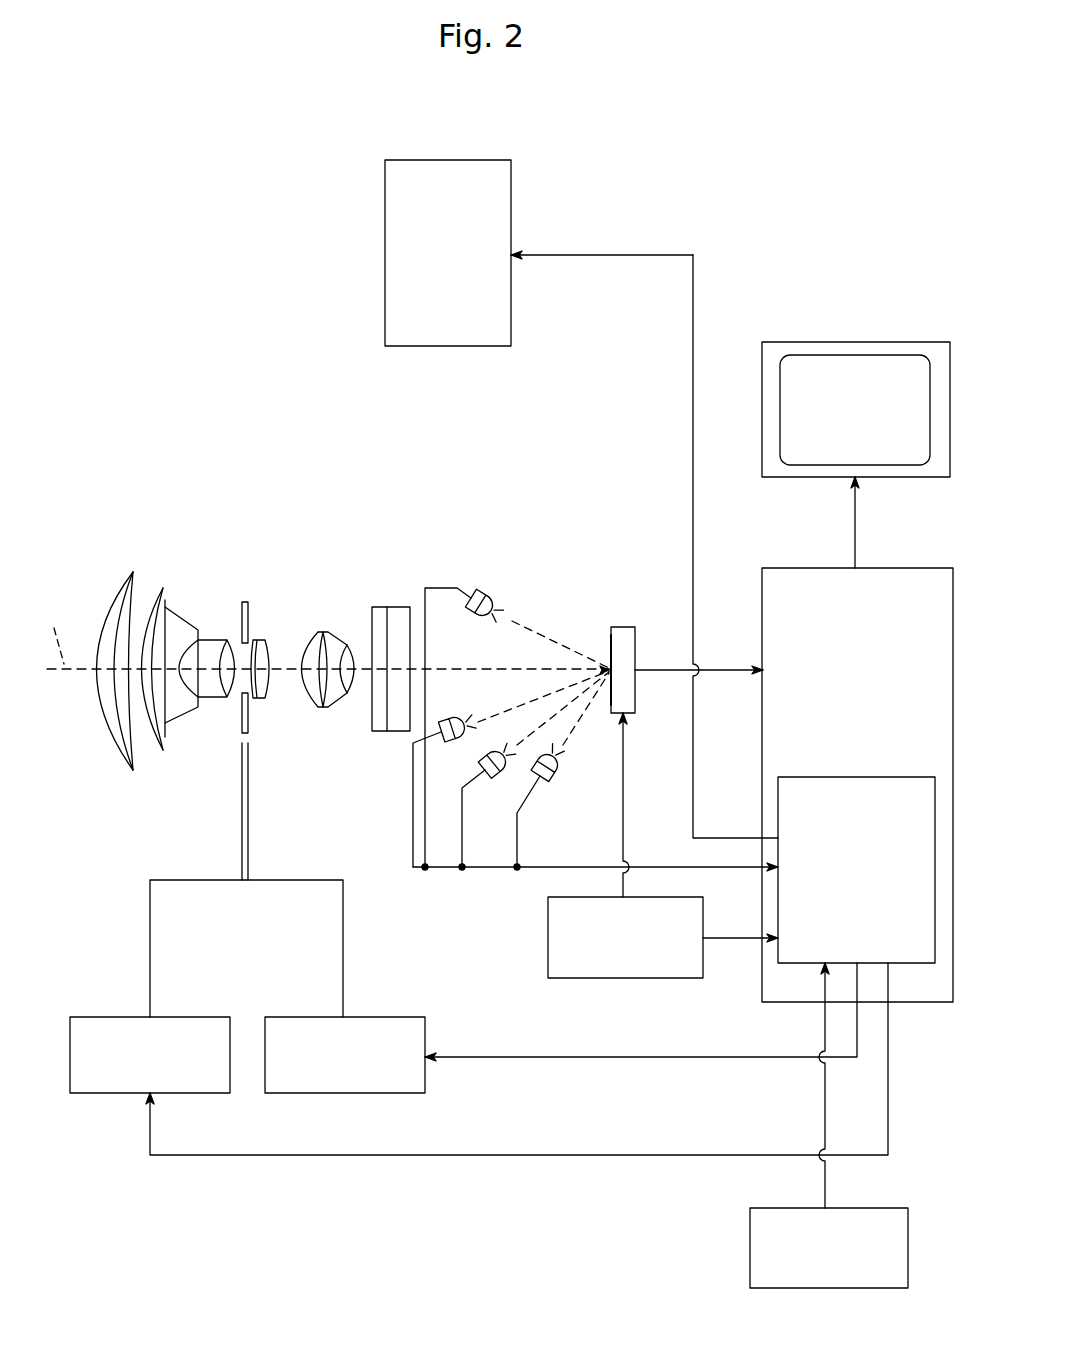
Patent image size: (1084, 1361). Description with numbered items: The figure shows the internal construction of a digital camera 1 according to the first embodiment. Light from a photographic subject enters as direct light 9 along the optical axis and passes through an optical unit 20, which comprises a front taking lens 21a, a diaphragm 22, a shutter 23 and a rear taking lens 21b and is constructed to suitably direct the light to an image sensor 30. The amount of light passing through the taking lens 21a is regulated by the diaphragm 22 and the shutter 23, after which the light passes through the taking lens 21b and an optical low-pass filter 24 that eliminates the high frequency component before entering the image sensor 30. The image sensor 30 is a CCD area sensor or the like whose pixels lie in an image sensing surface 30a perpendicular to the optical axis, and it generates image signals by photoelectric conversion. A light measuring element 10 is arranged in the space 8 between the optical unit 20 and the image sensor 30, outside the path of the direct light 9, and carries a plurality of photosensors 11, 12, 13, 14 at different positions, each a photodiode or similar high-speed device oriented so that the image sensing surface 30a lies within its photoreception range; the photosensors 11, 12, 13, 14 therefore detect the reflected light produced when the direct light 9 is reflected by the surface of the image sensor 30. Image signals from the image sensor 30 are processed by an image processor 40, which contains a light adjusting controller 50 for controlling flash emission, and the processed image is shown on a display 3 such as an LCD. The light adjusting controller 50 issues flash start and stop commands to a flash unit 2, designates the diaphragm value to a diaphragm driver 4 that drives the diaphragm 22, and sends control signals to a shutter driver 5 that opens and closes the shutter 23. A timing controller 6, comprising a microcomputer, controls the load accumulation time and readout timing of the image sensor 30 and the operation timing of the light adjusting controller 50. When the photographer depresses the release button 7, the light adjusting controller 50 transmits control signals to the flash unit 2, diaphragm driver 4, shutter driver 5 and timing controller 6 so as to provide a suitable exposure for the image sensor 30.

The digital camera 1 is at (128, 123).
The flash unit 2 is at (447, 160).
The display 3 is at (853, 342).
The diaphragm driver 4 is at (110, 1017).
The shutter driver 5 is at (385, 1017).
The timing controller 6 is at (625, 978).
The release button 7 is at (750, 1250).
The space 8 is at (456, 569).
The direct light 9 is at (53, 629).
The light measuring element 10 is at (510, 590).
The photosensor 11 is at (482, 588).
The photosensor 12 is at (450, 713).
The photosensor 13 is at (498, 777).
The photosensor 14 is at (555, 783).
The optical unit 20 is at (93, 485).
The taking lens 21a is at (153, 577).
The taking lens 21b is at (303, 577).
The diaphragm 22 is at (240, 620).
The shutter 23 is at (250, 710).
The optical low-pass filter 24 is at (392, 607).
The image sensor 30 is at (635, 630).
The image sensing surface 30a is at (606, 646).
The image processor 40 is at (905, 568).
The light adjusting controller 50 is at (907, 777).